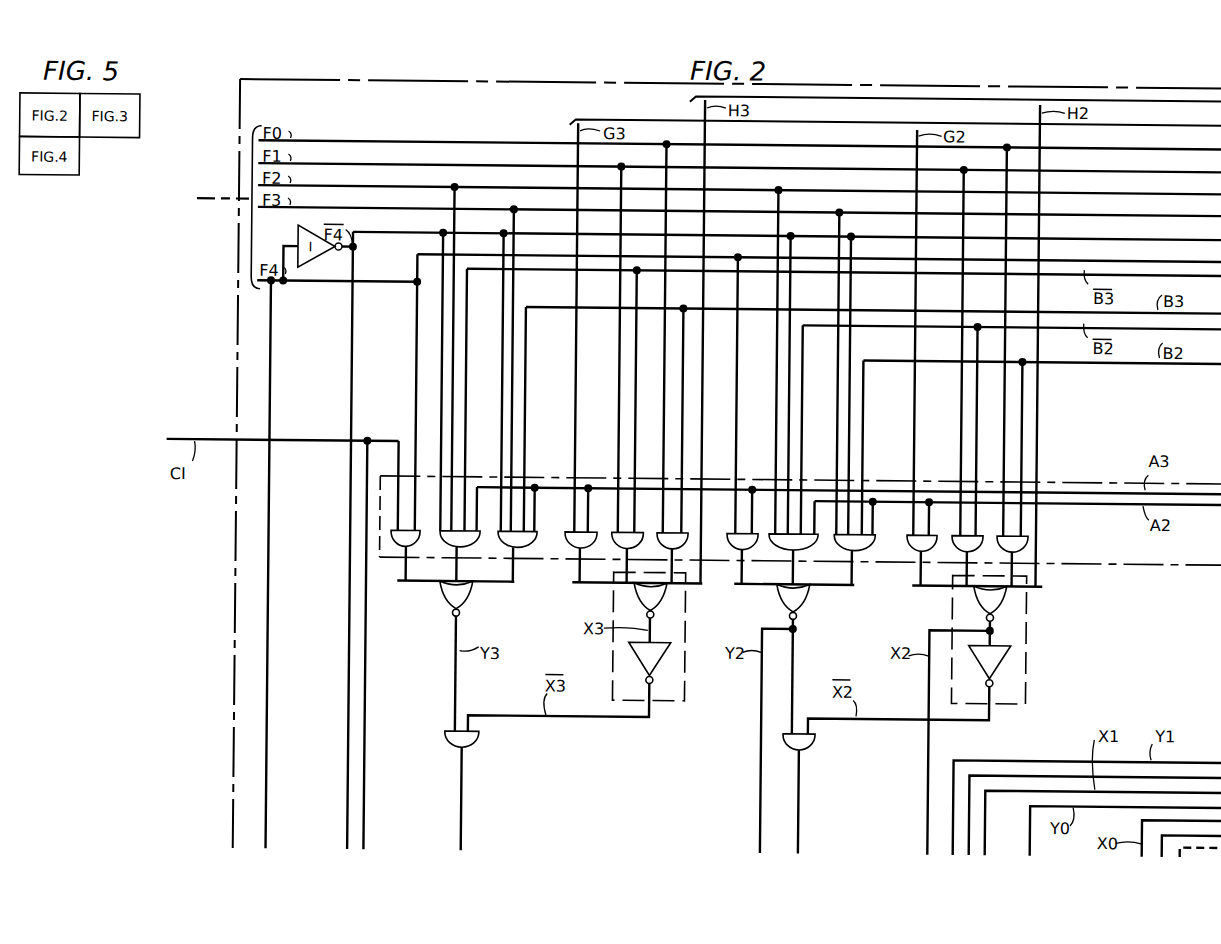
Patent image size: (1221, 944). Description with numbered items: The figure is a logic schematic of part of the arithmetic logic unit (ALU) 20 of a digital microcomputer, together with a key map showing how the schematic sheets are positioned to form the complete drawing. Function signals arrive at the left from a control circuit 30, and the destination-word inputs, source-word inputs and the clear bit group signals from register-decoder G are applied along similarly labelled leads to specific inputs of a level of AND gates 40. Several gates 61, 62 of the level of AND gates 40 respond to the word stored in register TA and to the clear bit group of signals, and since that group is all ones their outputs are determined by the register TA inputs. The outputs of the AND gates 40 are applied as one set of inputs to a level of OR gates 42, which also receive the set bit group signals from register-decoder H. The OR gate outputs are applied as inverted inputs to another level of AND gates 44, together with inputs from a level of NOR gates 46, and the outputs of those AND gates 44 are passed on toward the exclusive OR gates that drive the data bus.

The arithmetic logic unit 20 is at (727, 468).
The control circuit 30 is at (210, 206).
The level of AND gates 40 is at (800, 536).
The level of OR gates 42 is at (687, 699).
The level of AND gates 44 is at (476, 752).
The level of NOR gates 46 is at (479, 598).
The gate 61 is at (570, 531).
The gate 62 is at (913, 529).